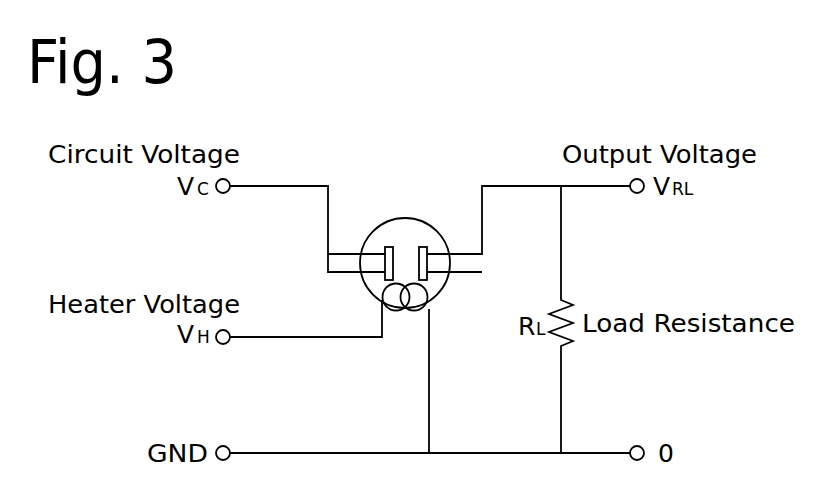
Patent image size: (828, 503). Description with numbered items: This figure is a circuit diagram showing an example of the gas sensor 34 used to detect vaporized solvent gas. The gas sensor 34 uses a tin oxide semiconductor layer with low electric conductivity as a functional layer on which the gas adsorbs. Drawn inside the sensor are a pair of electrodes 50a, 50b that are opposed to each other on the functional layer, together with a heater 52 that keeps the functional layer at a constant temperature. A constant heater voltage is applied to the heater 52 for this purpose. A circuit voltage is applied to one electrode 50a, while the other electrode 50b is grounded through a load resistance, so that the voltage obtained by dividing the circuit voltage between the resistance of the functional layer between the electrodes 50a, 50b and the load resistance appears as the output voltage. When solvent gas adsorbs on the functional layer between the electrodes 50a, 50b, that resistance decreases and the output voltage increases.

The gas sensor 34 is at (405, 217).
The electrode 50a is at (385, 246).
The electrode 50b is at (425, 246).
The heater 52 is at (396, 297).